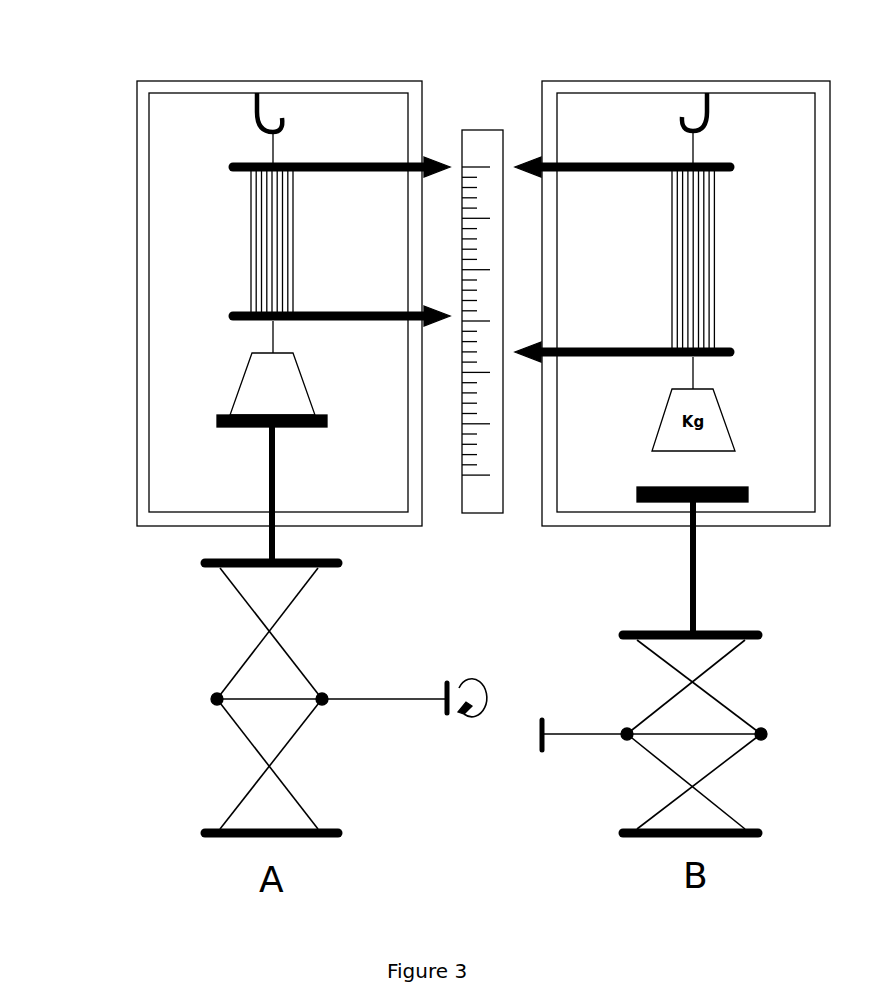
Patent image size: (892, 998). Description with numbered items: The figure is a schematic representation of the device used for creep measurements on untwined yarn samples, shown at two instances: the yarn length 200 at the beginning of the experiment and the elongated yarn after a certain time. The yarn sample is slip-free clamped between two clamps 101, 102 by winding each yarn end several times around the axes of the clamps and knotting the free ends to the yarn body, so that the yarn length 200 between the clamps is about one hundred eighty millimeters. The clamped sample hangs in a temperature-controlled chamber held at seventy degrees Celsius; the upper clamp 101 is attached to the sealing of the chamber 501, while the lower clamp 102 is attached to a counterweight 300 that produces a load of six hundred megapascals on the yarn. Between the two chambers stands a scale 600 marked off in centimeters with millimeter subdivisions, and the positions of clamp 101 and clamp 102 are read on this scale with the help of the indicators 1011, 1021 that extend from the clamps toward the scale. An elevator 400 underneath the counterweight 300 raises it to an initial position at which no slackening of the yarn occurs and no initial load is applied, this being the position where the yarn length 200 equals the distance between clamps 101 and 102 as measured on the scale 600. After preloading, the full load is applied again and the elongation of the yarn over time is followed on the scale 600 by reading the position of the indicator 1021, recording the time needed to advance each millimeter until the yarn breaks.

The sealing of the chamber 501 is at (187, 93).
The indicator 1011 is at (433, 148).
The indicator 1021 is at (433, 293).
The clamp 101 is at (261, 105).
The clamp 102 is at (261, 181).
The yarn length 200 is at (240, 240).
The counterweight 300 is at (226, 388).
The elevator 400 is at (200, 697).
The scale 600 is at (475, 120).